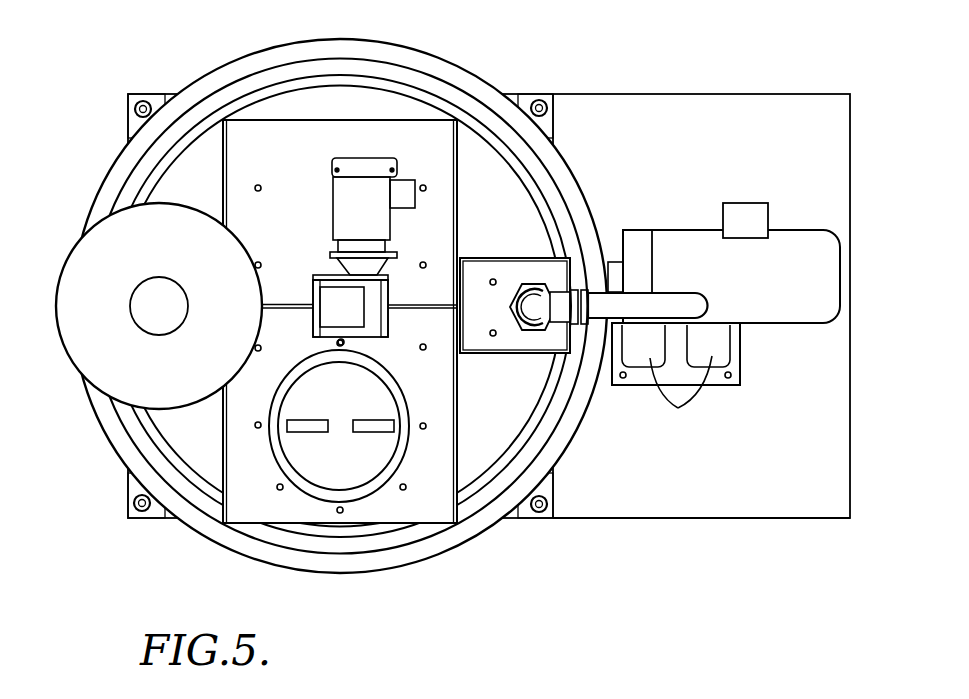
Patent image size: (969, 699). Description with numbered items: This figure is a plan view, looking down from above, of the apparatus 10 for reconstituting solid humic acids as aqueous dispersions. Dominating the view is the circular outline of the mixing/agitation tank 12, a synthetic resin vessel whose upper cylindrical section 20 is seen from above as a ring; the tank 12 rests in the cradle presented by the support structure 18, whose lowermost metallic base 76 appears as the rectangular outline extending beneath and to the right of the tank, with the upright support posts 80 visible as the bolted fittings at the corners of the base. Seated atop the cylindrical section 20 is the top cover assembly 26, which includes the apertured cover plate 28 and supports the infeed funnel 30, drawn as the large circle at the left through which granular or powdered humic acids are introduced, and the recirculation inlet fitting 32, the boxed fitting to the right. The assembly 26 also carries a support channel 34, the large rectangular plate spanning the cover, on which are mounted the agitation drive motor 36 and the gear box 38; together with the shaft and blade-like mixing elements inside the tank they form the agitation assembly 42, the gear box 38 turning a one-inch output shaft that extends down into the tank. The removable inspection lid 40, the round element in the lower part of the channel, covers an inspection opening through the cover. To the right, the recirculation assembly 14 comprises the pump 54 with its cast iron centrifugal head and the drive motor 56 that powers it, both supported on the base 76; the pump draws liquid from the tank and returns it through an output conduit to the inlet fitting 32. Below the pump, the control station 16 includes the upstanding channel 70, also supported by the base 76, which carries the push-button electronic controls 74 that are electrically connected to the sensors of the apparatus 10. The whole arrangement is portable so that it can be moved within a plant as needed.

The apparatus 10 is at (392, 598).
The mixing/agitation tank 12 is at (480, 58).
The recirculation assembly 14 is at (693, 200).
The control station 16 is at (755, 373).
The support structure 18 is at (660, 540).
The upper cylindrical section 20 is at (568, 450).
The top cover assembly 26 is at (506, 170).
The apertured cover plate 28 is at (228, 102).
The infeed funnel 30 is at (85, 263).
The recirculation inlet fitting 32 is at (543, 298).
The support channel 34 is at (458, 440).
The agitation drive motor 36 is at (378, 218).
The gear box 38 is at (326, 283).
The removable inspection lid 40 is at (300, 445).
The agitation assembly 42 is at (312, 200).
The pump 54 is at (633, 238).
The drive motor 56 is at (790, 240).
The upstanding channel 70 is at (742, 352).
The push-button electronic controls 74 is at (681, 398).
The metallic base 76 is at (764, 518).
The upright support posts 80 is at (545, 97).